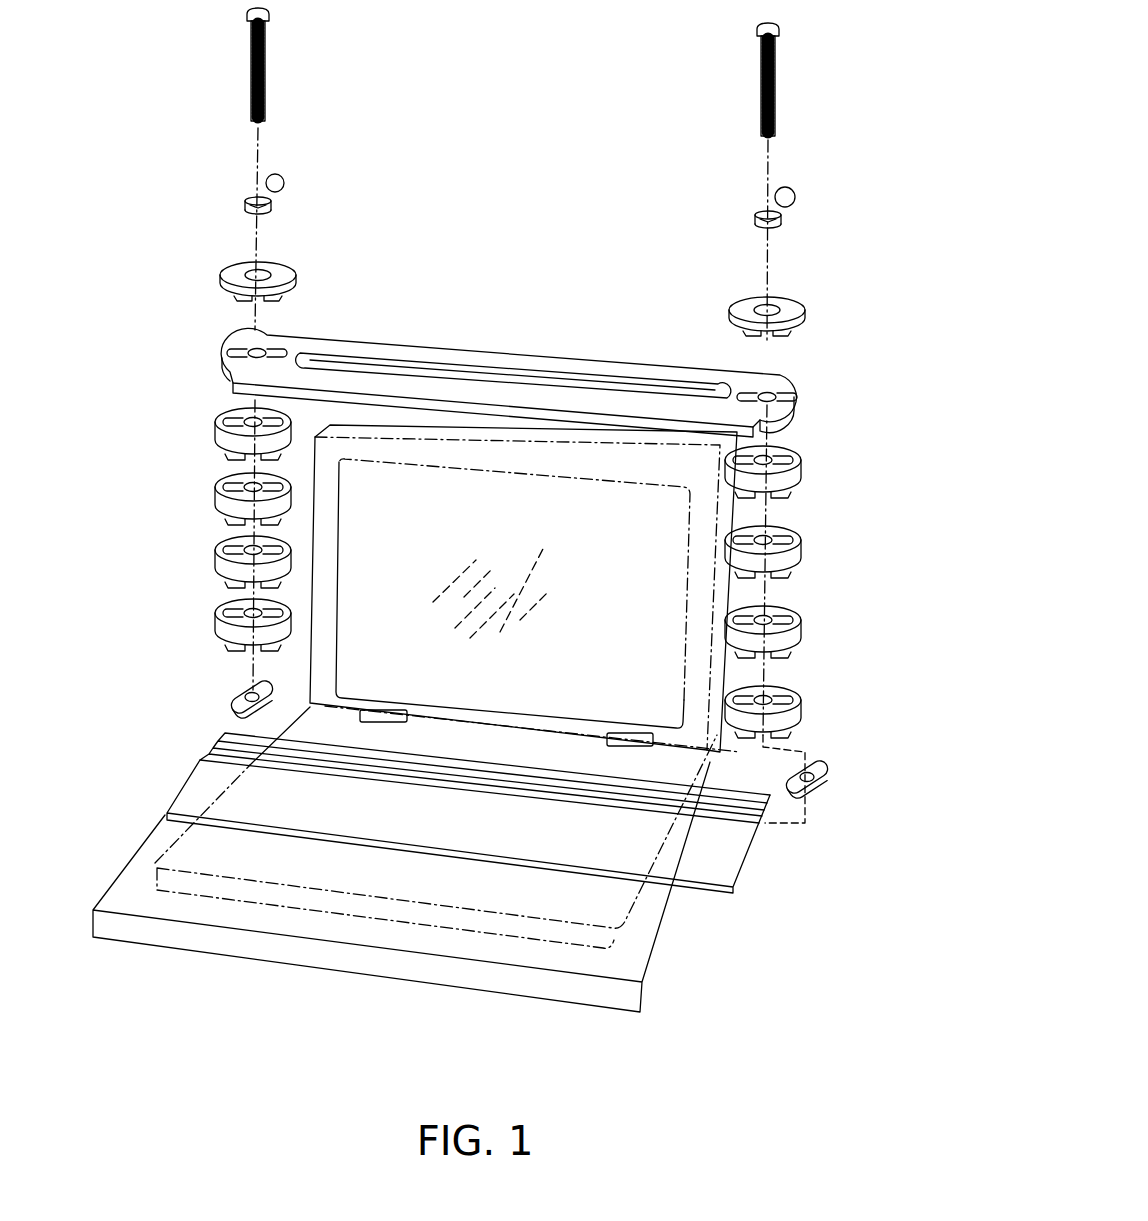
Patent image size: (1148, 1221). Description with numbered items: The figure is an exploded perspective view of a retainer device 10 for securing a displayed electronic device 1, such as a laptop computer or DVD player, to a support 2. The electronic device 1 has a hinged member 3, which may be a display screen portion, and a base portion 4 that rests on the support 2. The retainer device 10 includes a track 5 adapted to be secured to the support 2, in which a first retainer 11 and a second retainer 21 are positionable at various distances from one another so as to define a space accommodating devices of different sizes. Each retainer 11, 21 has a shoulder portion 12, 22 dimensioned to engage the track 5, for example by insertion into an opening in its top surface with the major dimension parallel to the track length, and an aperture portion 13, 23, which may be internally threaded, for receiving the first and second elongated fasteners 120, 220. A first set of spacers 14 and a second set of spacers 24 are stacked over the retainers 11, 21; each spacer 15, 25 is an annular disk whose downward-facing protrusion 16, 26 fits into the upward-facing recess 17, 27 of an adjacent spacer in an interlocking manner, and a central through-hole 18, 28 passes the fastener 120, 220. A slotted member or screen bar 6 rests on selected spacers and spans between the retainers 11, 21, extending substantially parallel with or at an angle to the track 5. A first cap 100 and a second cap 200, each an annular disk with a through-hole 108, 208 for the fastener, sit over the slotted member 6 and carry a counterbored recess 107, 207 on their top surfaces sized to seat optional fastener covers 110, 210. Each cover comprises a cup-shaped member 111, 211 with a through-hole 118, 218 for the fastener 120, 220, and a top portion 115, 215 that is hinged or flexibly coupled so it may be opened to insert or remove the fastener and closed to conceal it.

The displayed electronic device 1 is at (172, 840).
The support 2 is at (630, 963).
The hinged member 3 is at (380, 680).
The base portion 4 is at (588, 912).
The track 5 is at (724, 888).
The slotted member 6 is at (812, 396).
The retainer device 10 is at (146, 346).
The first retainer 11 is at (233, 703).
The shoulder portion 12 is at (229, 712).
The aperture portion 13 is at (246, 690).
The first set of spacers 14 is at (162, 410).
The spacer 15 is at (219, 432).
The protrusion 16 is at (224, 458).
The recess 17 is at (251, 420).
The through-hole 18 is at (242, 418).
The second retainer 21 is at (812, 794).
The shoulder portion 22 is at (828, 780).
The aperture portion 23 is at (814, 763).
The second set of spacers 24 is at (850, 442).
The spacer 25 is at (800, 478).
The protrusion 26 is at (797, 496).
The recess 27 is at (766, 452).
The through-hole 28 is at (795, 458).
The first cap 100 is at (218, 283).
The recess 107 is at (256, 272).
The through-hole 108 is at (243, 265).
The fastener cover 110 is at (362, 140).
The cup-shaped member 111 is at (252, 198).
The top portion 115 is at (285, 183).
The through-hole 118 is at (268, 211).
The first elongated fastener 120 is at (253, 62).
The second cap 200 is at (800, 313).
The recess 207 is at (770, 300).
The through-hole 208 is at (787, 303).
The fastener cover 210 is at (815, 135).
The cup-shaped member 211 is at (758, 211).
The top portion 215 is at (794, 194).
The through-hole 218 is at (758, 224).
The second elongated fastener 220 is at (762, 97).